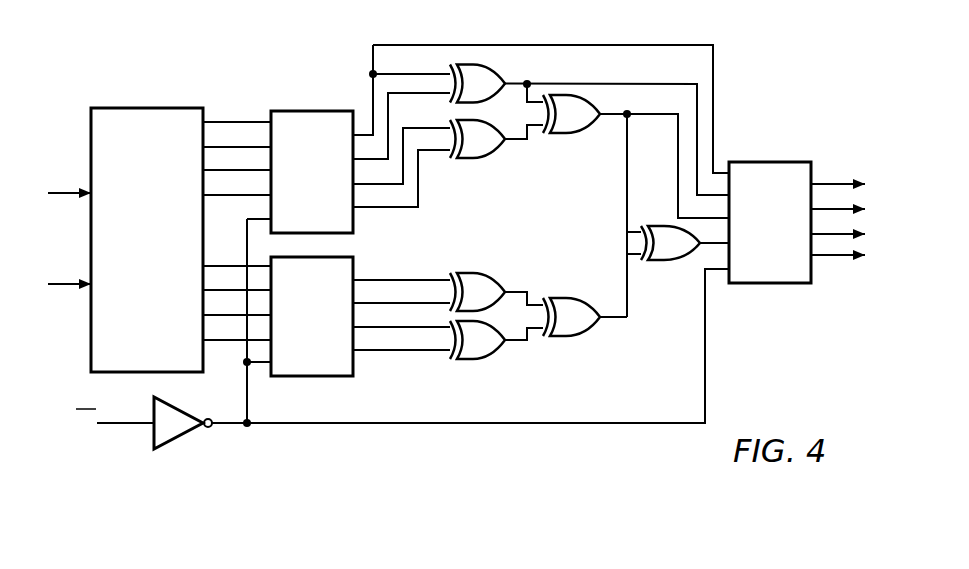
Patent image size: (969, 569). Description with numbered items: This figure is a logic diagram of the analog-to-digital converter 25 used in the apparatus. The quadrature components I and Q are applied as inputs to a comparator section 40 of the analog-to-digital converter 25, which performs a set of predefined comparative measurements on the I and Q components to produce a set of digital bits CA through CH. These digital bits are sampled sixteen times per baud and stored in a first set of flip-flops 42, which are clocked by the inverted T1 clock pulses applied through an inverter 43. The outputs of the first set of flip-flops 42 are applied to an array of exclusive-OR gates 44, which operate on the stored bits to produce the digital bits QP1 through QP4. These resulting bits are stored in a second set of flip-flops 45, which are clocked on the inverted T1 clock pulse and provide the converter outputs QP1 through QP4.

The analog-to-digital converter 25 is at (432, 443).
The comparator section 40 is at (151, 108).
The first set of flip-flops 42 is at (355, 234).
The inverter 43 is at (178, 435).
The exclusive-OR gates 44 is at (527, 41).
The second set of flip-flops 45 is at (775, 283).